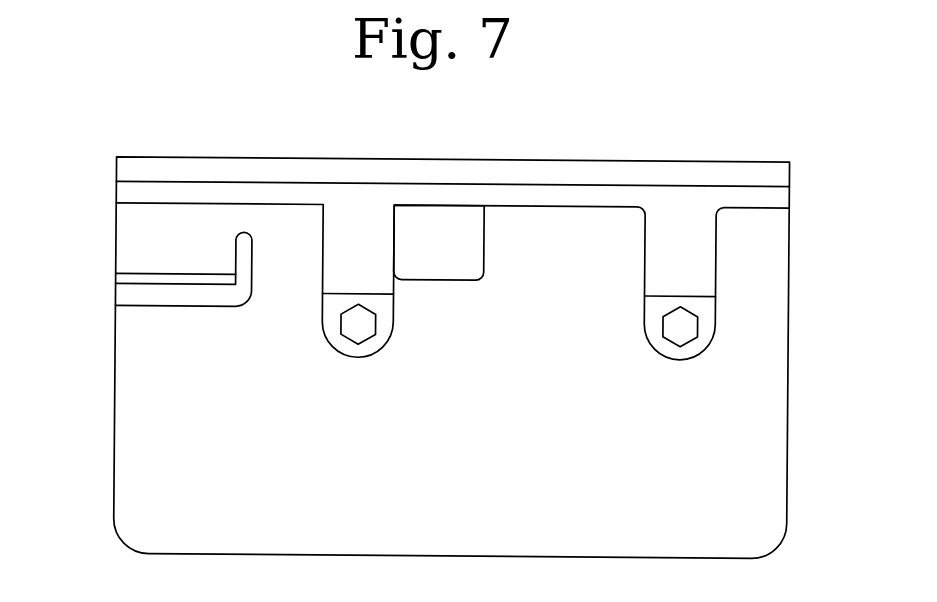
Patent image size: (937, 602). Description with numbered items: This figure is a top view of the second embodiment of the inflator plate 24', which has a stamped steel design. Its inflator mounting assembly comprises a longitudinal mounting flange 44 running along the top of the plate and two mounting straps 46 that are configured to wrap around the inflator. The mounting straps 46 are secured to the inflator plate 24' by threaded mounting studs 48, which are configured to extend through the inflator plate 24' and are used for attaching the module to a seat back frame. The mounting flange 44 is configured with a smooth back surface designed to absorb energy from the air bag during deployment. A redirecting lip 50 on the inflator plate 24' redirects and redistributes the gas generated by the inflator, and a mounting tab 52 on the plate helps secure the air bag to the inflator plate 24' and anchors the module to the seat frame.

The inflator plate 24' is at (489, 358).
The longitudinal mounting flange 44 is at (270, 165).
The mounting straps 46 is at (359, 245).
The threaded mounting studs 48 is at (352, 323).
The redirecting lip 50 is at (126, 263).
The mounting tab 52 is at (467, 253).